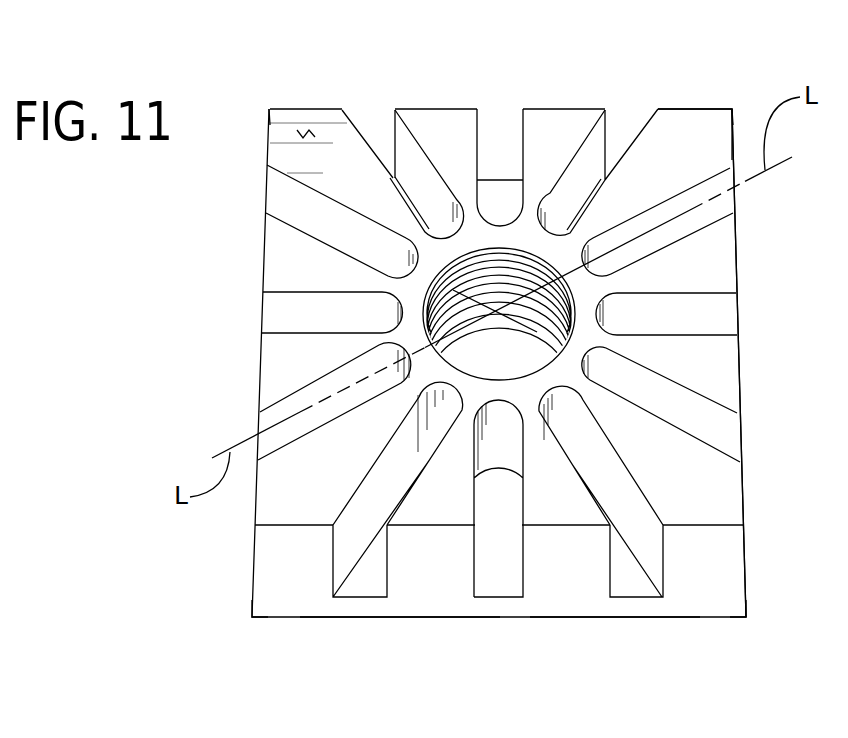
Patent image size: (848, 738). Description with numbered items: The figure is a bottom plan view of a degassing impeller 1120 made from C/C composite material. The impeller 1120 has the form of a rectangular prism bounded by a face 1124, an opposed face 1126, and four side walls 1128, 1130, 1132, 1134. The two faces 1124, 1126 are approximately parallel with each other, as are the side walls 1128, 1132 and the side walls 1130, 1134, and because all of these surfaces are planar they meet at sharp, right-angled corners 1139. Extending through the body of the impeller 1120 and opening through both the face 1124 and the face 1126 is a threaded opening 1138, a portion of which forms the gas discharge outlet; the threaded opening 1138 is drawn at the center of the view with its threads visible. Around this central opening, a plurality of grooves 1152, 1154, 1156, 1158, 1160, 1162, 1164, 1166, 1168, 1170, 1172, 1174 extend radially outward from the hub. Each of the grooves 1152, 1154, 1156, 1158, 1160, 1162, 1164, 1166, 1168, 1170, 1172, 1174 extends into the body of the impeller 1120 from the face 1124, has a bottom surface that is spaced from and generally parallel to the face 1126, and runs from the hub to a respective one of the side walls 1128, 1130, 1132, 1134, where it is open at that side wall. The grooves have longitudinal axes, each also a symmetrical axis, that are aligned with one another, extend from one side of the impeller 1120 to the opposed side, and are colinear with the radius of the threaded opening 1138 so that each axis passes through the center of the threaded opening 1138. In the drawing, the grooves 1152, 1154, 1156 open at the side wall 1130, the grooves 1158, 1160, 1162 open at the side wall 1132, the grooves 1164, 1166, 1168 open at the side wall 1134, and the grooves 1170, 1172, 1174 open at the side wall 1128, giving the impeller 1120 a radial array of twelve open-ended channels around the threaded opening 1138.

The impeller 1120 is at (203, 276).
The face 1124 is at (307, 128).
The face 1126 is at (398, 620).
The side wall 1128 is at (253, 550).
The side wall 1130 is at (572, 598).
The side wall 1132 is at (738, 306).
The side wall 1134 is at (488, 178).
The threaded opening 1138 is at (503, 317).
The corners 1139 is at (270, 108).
The groove 1152 is at (370, 578).
The groove 1154 is at (497, 578).
The groove 1156 is at (630, 580).
The groove 1158 is at (725, 432).
The groove 1160 is at (725, 320).
The groove 1162 is at (740, 198).
The groove 1164 is at (597, 152).
The groove 1166 is at (512, 190).
The groove 1168 is at (403, 152).
The groove 1170 is at (278, 188).
The groove 1172 is at (278, 313).
The groove 1174 is at (250, 423).